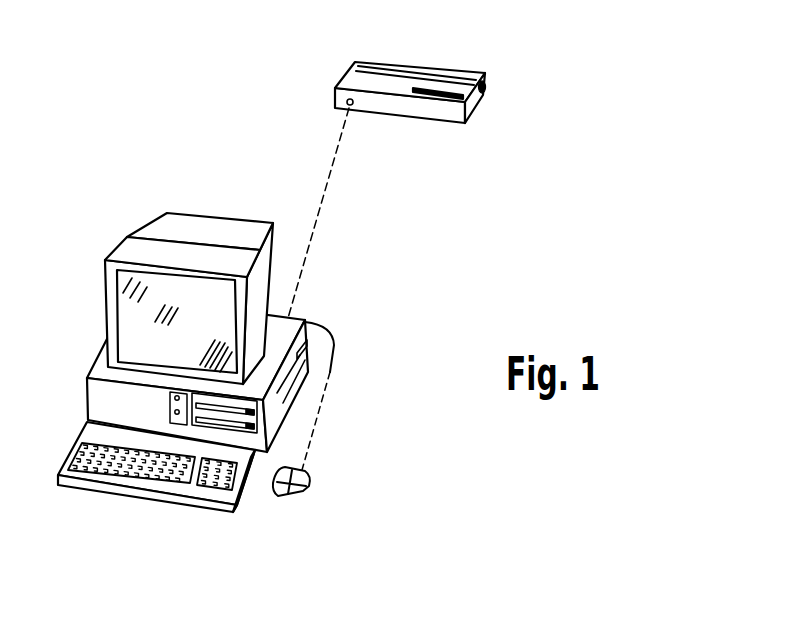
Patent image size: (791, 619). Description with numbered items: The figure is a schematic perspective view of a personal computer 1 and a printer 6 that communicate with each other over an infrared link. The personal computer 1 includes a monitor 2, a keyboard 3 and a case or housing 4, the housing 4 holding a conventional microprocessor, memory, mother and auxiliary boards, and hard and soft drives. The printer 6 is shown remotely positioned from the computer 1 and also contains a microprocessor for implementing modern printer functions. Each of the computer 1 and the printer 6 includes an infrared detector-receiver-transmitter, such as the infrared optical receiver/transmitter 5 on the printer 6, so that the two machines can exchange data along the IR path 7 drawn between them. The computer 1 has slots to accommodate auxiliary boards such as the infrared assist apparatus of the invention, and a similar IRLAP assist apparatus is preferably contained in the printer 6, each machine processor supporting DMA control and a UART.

The personal computer 1 is at (233, 207).
The monitor 2 is at (125, 235).
The keyboard 3 is at (237, 508).
The case or housing 4 is at (300, 313).
The infrared optical receiver/transmitter 5 is at (340, 103).
The printer 6 is at (472, 115).
The IR path 7 is at (322, 212).